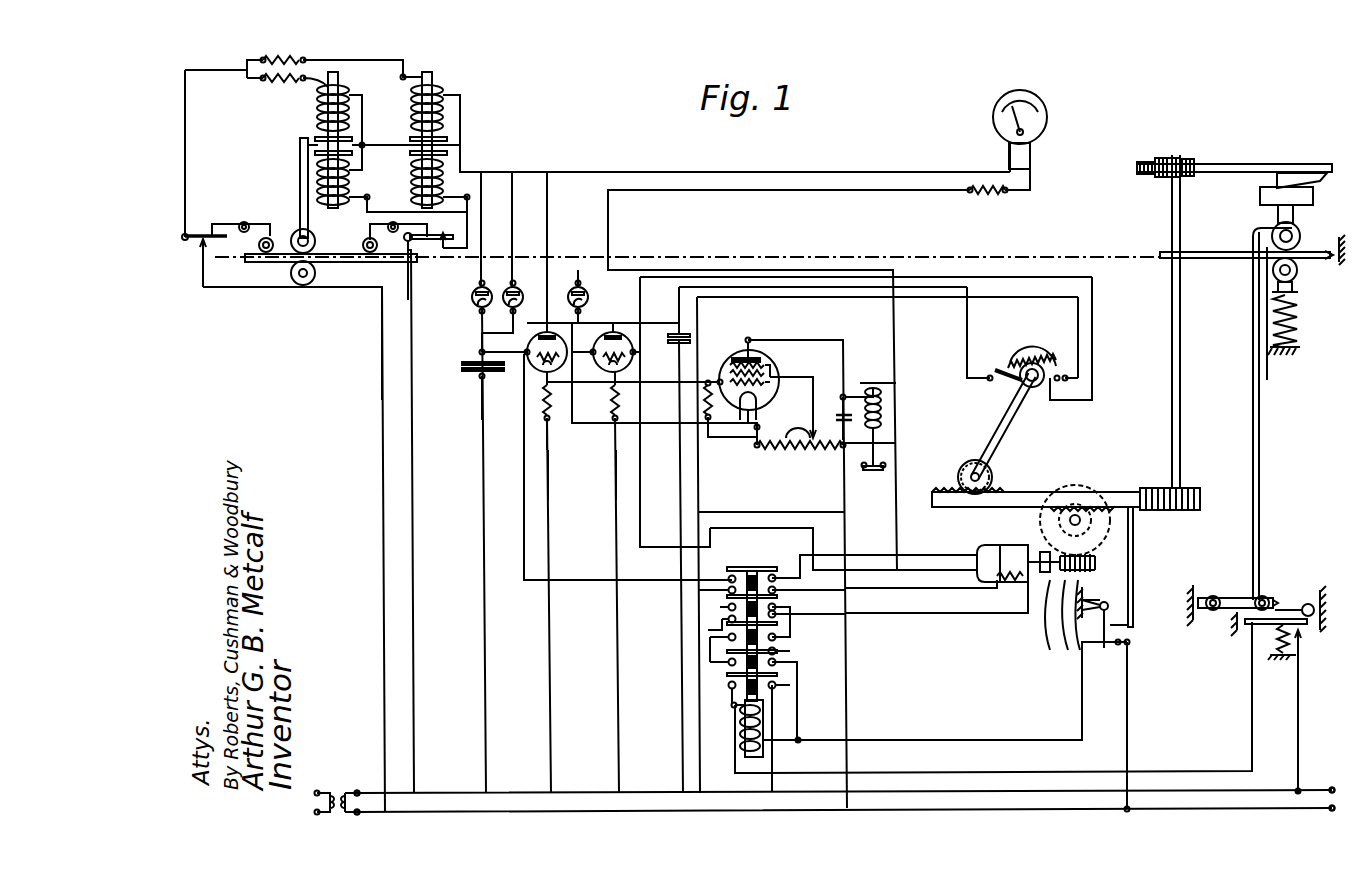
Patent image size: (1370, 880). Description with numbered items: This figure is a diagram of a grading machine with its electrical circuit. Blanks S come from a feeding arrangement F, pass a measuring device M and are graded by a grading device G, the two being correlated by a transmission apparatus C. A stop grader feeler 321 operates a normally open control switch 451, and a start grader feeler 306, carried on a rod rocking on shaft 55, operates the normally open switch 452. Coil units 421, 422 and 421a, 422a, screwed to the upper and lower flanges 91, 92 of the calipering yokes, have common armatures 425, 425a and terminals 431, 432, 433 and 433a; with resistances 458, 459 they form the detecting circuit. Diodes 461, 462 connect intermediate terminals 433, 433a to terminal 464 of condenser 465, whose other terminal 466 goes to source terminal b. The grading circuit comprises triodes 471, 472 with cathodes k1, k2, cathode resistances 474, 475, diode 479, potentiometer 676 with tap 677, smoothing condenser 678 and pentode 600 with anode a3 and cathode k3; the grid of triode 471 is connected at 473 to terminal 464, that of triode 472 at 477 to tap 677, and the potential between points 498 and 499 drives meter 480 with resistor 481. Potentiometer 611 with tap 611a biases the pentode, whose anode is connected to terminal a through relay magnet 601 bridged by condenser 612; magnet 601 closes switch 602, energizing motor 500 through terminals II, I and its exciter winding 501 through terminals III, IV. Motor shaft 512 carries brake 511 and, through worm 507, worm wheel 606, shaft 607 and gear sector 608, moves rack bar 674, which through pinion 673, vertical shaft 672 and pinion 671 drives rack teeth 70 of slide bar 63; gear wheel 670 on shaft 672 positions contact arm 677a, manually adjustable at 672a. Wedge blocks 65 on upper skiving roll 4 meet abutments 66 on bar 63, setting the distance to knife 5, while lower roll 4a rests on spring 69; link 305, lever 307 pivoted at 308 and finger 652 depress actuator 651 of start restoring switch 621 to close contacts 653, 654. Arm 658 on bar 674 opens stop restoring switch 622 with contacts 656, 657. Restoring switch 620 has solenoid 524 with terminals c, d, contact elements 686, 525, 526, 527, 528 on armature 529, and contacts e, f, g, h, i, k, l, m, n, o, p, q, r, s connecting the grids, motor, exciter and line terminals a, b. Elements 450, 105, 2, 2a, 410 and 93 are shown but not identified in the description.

The resistor 450 is at (262, 62).
The resistance 458 is at (262, 80).
The resistance 459 is at (248, 78).
The coil terminal 431 is at (232, 100).
The coil unit 421 is at (318, 88).
The armature 425 is at (326, 110).
The intermediate coil terminal 433 is at (354, 146).
The lever arm 105 is at (300, 160).
The coil unit 422 is at (349, 180).
The coil unit 421a is at (443, 92).
The armature 425a is at (433, 105).
The intermediate coil terminal 433a is at (450, 150).
The coil terminal 432 is at (465, 150).
The coil unit 422a is at (450, 175).
The start grader switch 452 is at (450, 212).
The stop grader switch 451 is at (195, 234).
The pivoted switch arm 2 is at (298, 228).
The blanks S is at (280, 262).
The roller 2a is at (304, 277).
The feeding arrangement F is at (215, 268).
The start grader feeler 306 is at (405, 262).
The stop grader feeler 321 is at (210, 250).
The conductor 410 is at (215, 320).
The shaft 55 is at (380, 300).
The diode 461 is at (471, 296).
The diode 462 is at (520, 290).
The diode 479 is at (572, 290).
The condenser terminal 464 is at (482, 330).
The connection point 473 is at (500, 333).
The triode 471 is at (462, 367).
The condenser terminal 466 is at (482, 382).
The condenser 465 is at (380, 370).
The upper flange 91 is at (538, 362).
The cathode k1 is at (545, 372).
The potential point 498 is at (545, 395).
The cathode resistance 474 is at (551, 420).
The cathode resistance 475 is at (615, 420).
The cathode k2 is at (612, 372).
The triode 472 is at (550, 345).
The lower flange 92 is at (578, 340).
The connection point 477 is at (640, 350).
The potential point 499 is at (650, 360).
The smoothing condenser 678 is at (692, 338).
The control tube 600 is at (722, 358).
The anode a3 is at (760, 360).
The vacuum tube / resistor 93 is at (710, 380).
The cathode k3 is at (762, 408).
The potentiometer 611 is at (800, 447).
The adjustable potentiometer tap 611a is at (810, 443).
The condenser 612 is at (843, 395).
The relay magnet 601 is at (878, 388).
The switch 602 is at (880, 470).
The transmission apparatus C is at (866, 341).
The adjustable tap 677 is at (1020, 368).
The potentiometer 676 is at (1048, 355).
The contact arm 677a is at (995, 387).
The manual adjustment 672a is at (1068, 378).
The vertical shaft 672 is at (1010, 420).
The pinion 671 is at (975, 460).
The rack bar 674 is at (1005, 492).
The worm wheel 606 is at (1065, 487).
The shaft 607 is at (1077, 512).
The gear sector 608 is at (1082, 518).
The pinion 673 is at (1180, 488).
The arm 658 is at (1133, 524).
The electromotor 500 is at (1003, 545).
The motor terminal I is at (972, 552).
The motor terminal II is at (970, 568).
The exciter terminal IV is at (1002, 552).
The exciter terminal III is at (996, 576).
The exciter winding 501 is at (1025, 582).
The brake 511 is at (1060, 575).
The motor shaft 512 is at (1066, 600).
The worm 507 is at (1080, 610).
The stop restoring switch 622 is at (1128, 637).
The fixed contact 656 is at (1120, 648).
The movable contact 657 is at (1104, 637).
The link 305 is at (1262, 455).
The finger 652 is at (1270, 595).
The actuator 651 is at (1295, 600).
The pivot 308 is at (1193, 598).
The two-armed lever 307 is at (1237, 598).
The switch element 653 is at (1250, 626).
The contact 654 is at (1275, 650).
The start restoring switch 621 is at (1309, 637).
The meter 480 is at (1037, 105).
The resistor 481 is at (1005, 193).
The grading device G is at (1217, 151).
The rack of teeth 70 is at (1145, 162).
The gear wheel 670 is at (1185, 159).
The slide bar 63 is at (1245, 164).
The inverted wedge block 66 is at (1285, 177).
The wedge block 65 is at (1268, 200).
The upper skiving roll 4 is at (1272, 232).
The knife blade 5 is at (1336, 252).
The lower skiving roll 4a is at (1273, 270).
The spring 69 is at (1296, 322).
The contact element 686 is at (750, 567).
The solenoid 524 is at (766, 714).
The contact e is at (728, 581).
The contact g is at (728, 592).
The contact i is at (728, 608).
The contact l is at (728, 620).
The contact n is at (728, 638).
The contact p is at (728, 663).
The contact r is at (728, 686).
The restoring switch 620 is at (712, 704).
The solenoid terminal c is at (730, 706).
The contact h is at (778, 578).
The contact element 525 is at (778, 606).
The contact k is at (790, 590).
The contact m is at (790, 614).
The contact element 526 is at (790, 637).
The contact o is at (790, 638).
The contact element 527 is at (790, 651).
The contact q is at (800, 663).
The contact element 528 is at (778, 674).
The contact s is at (790, 686).
The armature 529 is at (760, 692).
The solenoid terminal d is at (798, 742).
The contact f is at (790, 575).
The source terminal a is at (842, 820).
The source terminal b is at (842, 779).
The measuring device M is at (663, 101).